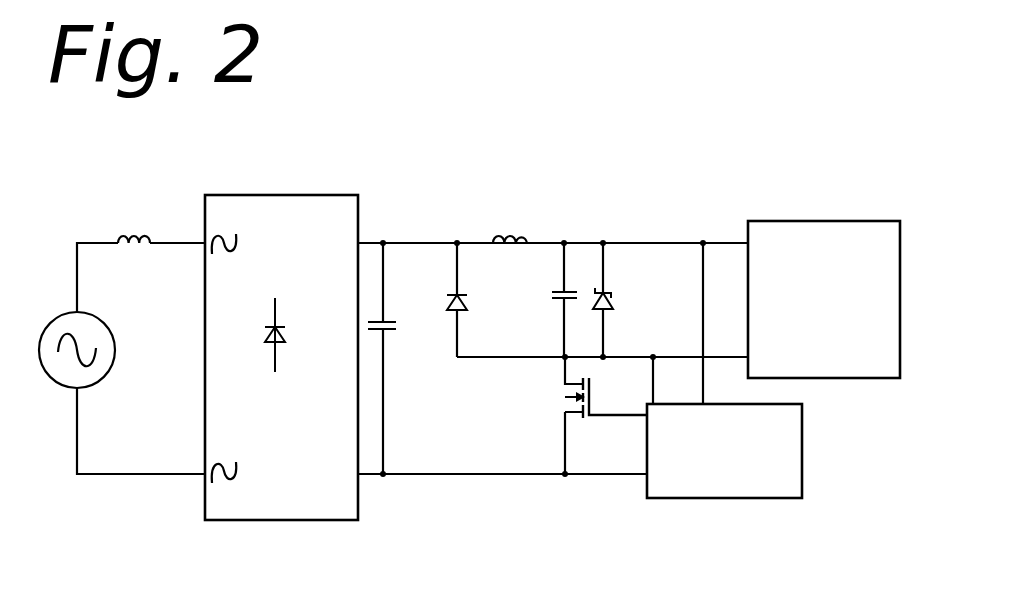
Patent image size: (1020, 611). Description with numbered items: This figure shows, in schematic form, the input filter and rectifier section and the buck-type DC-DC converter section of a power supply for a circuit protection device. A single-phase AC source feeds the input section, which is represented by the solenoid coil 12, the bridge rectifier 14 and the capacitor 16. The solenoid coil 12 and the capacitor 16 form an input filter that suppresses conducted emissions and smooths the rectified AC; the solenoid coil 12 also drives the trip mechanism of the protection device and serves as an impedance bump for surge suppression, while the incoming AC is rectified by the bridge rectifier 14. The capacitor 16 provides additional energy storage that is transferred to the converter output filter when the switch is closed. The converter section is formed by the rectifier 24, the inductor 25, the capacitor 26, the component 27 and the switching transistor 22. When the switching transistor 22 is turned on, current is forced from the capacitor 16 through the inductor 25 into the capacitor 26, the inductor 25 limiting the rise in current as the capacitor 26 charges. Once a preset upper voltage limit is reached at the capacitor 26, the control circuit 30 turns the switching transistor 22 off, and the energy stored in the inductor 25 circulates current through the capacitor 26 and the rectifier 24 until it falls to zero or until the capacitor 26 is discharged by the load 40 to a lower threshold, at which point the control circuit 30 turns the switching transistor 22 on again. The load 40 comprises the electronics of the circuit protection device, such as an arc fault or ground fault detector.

The solenoid coil 12 is at (138, 240).
The bridge rectifier 14 is at (295, 435).
The capacitor 16 is at (385, 332).
The switching transistor 22 is at (563, 397).
The rectifier 24 is at (455, 292).
The inductor 25 is at (514, 240).
The capacitor 26 is at (566, 291).
The component of buck-type DC to DC converter 27 is at (604, 295).
The control circuit 30 is at (758, 499).
The load 40 is at (853, 220).